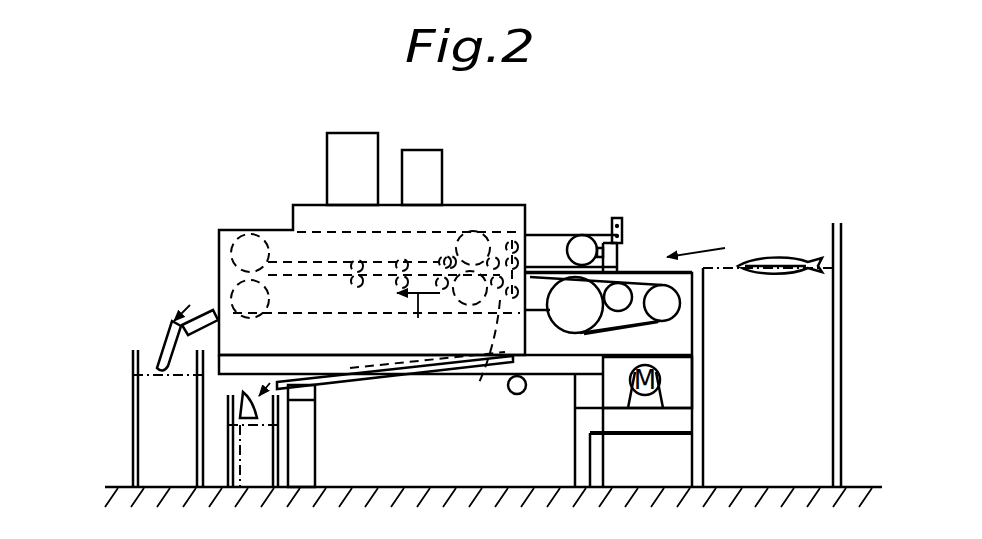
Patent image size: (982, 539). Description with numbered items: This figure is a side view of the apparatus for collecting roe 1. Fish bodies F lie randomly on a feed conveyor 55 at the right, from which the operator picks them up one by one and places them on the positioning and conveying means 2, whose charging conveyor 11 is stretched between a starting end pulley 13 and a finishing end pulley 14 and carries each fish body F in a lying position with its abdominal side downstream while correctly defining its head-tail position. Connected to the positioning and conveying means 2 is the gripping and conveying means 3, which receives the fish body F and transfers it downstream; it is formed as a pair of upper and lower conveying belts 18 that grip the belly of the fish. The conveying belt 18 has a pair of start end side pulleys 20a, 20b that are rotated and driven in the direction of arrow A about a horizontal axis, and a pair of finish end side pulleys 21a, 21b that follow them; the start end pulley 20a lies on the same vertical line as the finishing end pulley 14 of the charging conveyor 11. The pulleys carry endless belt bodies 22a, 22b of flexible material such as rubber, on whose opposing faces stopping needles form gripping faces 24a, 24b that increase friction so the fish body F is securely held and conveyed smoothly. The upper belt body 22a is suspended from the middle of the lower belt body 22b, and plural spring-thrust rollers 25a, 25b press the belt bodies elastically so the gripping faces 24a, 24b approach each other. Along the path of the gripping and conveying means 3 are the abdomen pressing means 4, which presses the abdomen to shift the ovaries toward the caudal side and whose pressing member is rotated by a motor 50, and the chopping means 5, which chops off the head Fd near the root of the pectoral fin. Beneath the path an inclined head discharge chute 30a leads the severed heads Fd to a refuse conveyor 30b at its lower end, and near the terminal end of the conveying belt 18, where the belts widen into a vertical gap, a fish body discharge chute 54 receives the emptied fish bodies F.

The apparatus for collecting roe 1 is at (172, 170).
The positioning and conveying means 2 is at (641, 275).
The gripping and conveying means 3 is at (549, 229).
The abdomen pressing means 4 is at (521, 232).
The chopping means 5 is at (473, 228).
The charging conveyor 11 is at (656, 323).
The starting end pulley 13 is at (665, 302).
The finishing end pulley 14 is at (572, 326).
The conveying belt 18 is at (450, 256).
The start end side pulley 20a is at (583, 248).
The start end side pulley 20b is at (621, 302).
The finish end side pulley 21a is at (250, 250).
The finish end side pulley 21b is at (236, 286).
The upper belt body 22a is at (318, 232).
The lower belt body 22b is at (375, 315).
The gripping face 24a is at (385, 294).
The gripping face 24b is at (383, 254).
The roller 25a is at (500, 300).
The roller 25b is at (474, 359).
The head discharge chute 30a is at (332, 385).
The refuse conveyor 30b is at (247, 427).
The motor 50 is at (326, 136).
The fish body discharge chute 54 is at (210, 317).
The feed conveyor 55 is at (783, 279).
The direction of arrow A is at (418, 318).
The fish body F is at (775, 262).
The head Fd is at (243, 457).